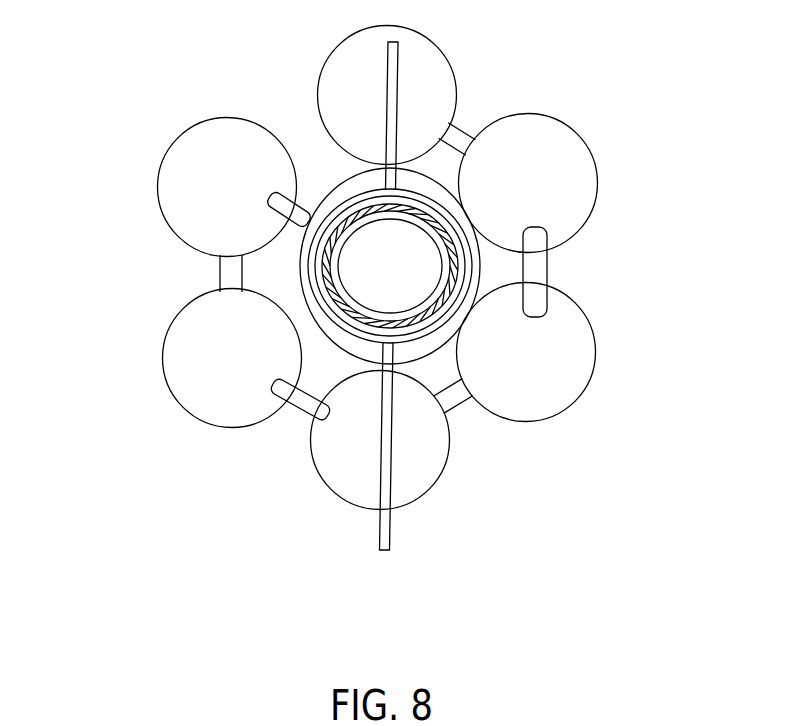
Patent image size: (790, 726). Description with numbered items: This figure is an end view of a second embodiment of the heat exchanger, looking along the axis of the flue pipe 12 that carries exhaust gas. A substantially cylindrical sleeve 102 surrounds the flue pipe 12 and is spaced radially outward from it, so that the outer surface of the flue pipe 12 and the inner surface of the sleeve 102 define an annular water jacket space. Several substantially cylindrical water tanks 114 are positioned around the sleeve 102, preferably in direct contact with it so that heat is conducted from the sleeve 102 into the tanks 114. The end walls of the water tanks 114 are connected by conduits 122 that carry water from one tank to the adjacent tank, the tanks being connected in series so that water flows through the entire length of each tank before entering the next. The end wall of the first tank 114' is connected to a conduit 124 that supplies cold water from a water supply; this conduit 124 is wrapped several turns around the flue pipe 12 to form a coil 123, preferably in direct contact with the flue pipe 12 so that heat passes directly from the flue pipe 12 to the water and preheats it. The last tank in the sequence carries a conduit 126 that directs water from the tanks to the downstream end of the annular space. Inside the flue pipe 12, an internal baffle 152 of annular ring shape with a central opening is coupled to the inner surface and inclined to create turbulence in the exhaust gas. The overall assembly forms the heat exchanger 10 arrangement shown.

The power tool / assembly 10 is at (385, 575).
The flue pipe 12 is at (315, 319).
The sleeve 102 is at (332, 178).
The water tanks 114 is at (427, 312).
The first tank 114' is at (396, 83).
The conduit 122 is at (462, 120).
The coil 123 is at (464, 273).
The conduit 124 is at (399, 92).
The conduit 126 is at (266, 195).
The internal baffle 152 is at (380, 318).